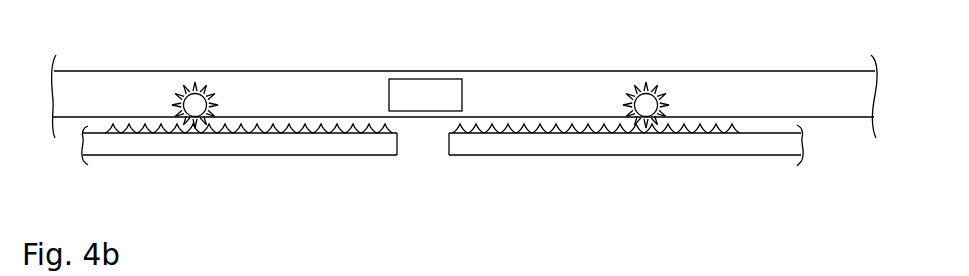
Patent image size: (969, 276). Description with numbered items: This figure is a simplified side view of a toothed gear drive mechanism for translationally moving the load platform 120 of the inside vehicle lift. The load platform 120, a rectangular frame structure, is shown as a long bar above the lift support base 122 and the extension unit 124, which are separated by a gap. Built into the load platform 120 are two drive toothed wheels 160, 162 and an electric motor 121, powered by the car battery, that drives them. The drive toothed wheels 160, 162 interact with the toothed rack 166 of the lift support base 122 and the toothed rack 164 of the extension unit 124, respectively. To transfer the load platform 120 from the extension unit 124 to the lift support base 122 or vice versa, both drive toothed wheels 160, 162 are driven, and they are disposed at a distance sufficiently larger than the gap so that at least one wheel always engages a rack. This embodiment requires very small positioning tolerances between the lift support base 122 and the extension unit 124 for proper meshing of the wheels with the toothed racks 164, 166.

The load platform 120 is at (750, 71).
The electric motor 121 is at (423, 79).
The lift support base 122 is at (128, 147).
The extension unit 124 is at (732, 150).
The drive toothed wheel 160 is at (196, 89).
The drive toothed wheel 162 is at (647, 90).
The toothed rack 164 is at (602, 133).
The toothed rack 166 is at (262, 133).